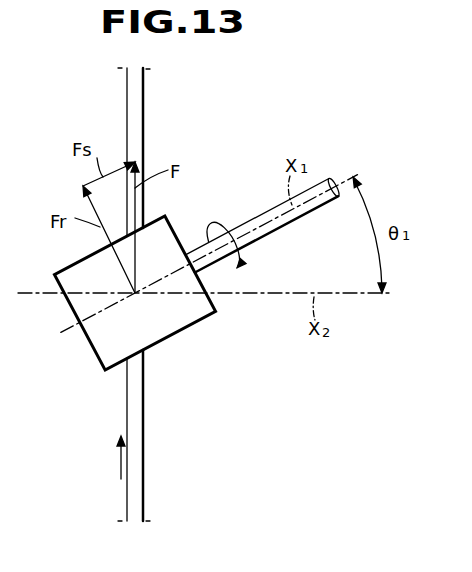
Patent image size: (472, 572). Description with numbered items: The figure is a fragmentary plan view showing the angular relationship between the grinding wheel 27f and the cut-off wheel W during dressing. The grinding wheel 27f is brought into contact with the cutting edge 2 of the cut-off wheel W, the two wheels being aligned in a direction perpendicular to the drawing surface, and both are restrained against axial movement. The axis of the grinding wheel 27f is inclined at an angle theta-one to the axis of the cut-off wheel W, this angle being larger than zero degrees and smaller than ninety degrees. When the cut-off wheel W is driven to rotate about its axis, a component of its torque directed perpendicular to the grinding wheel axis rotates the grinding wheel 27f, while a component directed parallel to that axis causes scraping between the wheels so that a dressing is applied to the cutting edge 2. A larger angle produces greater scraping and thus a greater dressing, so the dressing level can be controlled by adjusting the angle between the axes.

The grinding wheel 27f is at (180, 333).
The cutting edge 2 is at (136, 463).
The cut-off wheel W is at (153, 404).